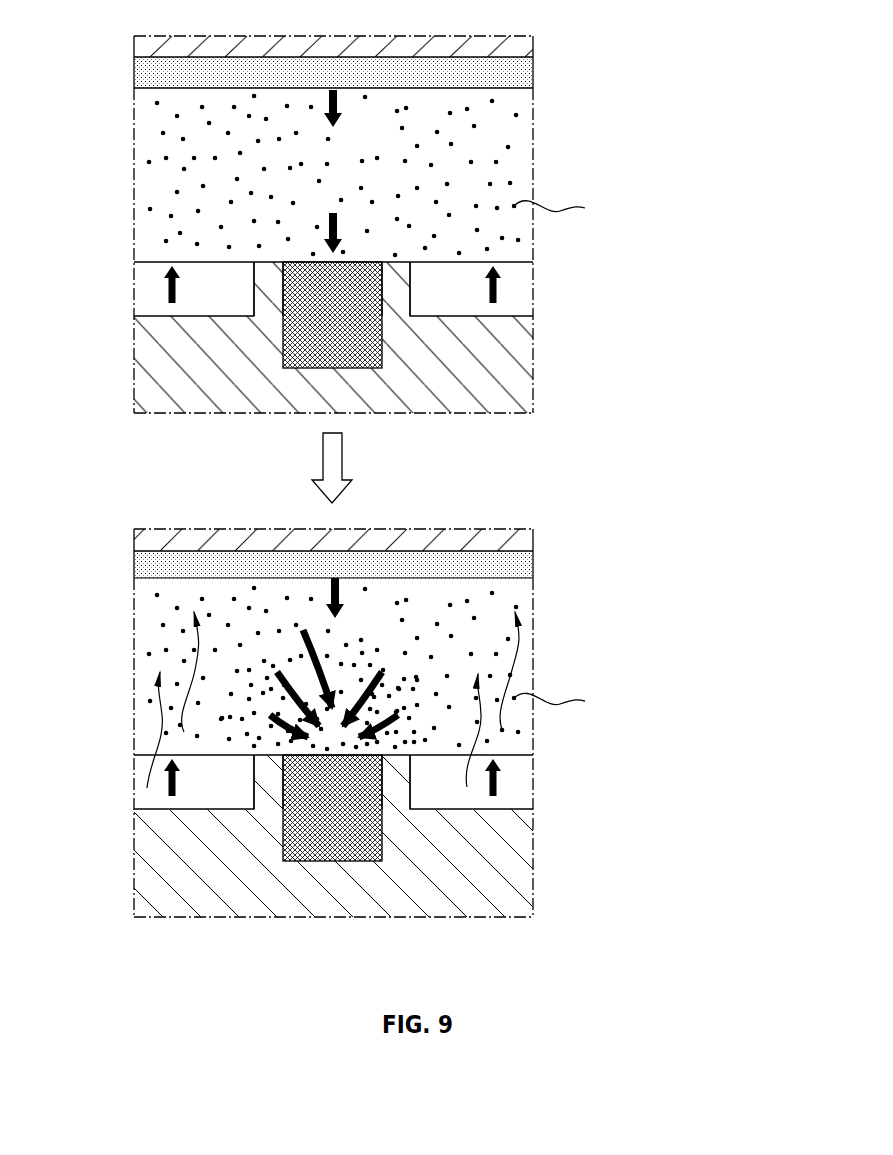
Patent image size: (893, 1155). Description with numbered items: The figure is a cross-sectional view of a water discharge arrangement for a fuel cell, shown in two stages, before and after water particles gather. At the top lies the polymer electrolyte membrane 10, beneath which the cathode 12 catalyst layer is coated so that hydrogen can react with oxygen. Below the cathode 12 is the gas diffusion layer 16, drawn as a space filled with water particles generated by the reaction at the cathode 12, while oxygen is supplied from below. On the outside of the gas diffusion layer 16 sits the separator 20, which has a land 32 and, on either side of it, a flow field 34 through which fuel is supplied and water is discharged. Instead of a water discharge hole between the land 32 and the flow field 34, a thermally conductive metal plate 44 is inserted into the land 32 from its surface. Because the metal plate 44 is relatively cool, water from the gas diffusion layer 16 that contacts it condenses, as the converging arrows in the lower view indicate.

The polymer electrolyte membrane 10 is at (136, 48).
The cathode 12 is at (138, 77).
The gas diffusion layer 16 is at (133, 92).
The separator 20 is at (525, 393).
The land 32 is at (395, 253).
The flow field 34 is at (223, 300).
The thermally conductive metal plate 44 is at (360, 355).